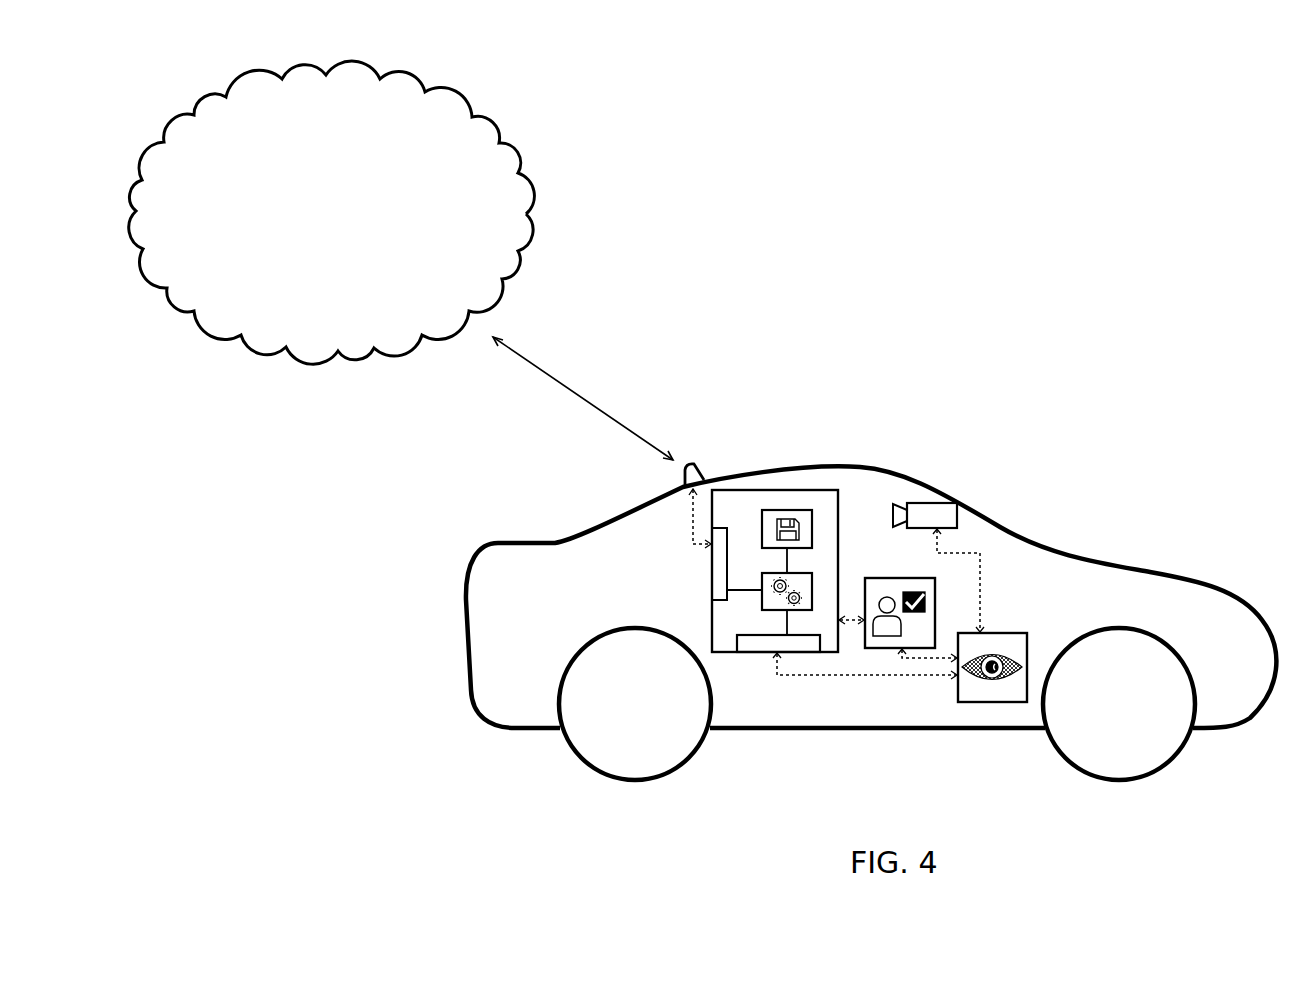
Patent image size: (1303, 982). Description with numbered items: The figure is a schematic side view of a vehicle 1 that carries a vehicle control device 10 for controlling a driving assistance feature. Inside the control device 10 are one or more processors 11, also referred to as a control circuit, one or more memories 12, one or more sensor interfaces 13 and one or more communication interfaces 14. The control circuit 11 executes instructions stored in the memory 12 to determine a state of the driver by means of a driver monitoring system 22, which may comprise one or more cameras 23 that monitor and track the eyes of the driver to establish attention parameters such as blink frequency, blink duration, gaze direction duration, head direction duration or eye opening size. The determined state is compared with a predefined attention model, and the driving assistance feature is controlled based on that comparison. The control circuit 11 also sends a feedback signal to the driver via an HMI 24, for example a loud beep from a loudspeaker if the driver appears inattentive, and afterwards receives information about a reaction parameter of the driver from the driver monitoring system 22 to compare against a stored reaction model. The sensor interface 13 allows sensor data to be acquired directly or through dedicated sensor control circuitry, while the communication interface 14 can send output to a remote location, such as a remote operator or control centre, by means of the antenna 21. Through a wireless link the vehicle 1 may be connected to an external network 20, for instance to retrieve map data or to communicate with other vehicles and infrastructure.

The vehicle 1 is at (487, 722).
The vehicle control device 10 is at (765, 490).
The processor 11 is at (815, 597).
The memory 12 is at (787, 508).
The sensor interface 13 is at (760, 647).
The communication interface 14 is at (717, 577).
The external network 20 is at (478, 98).
The antenna 21 is at (692, 466).
The driver monitoring system 22 is at (1005, 703).
The camera 23 is at (927, 503).
The HMI 24 is at (936, 619).